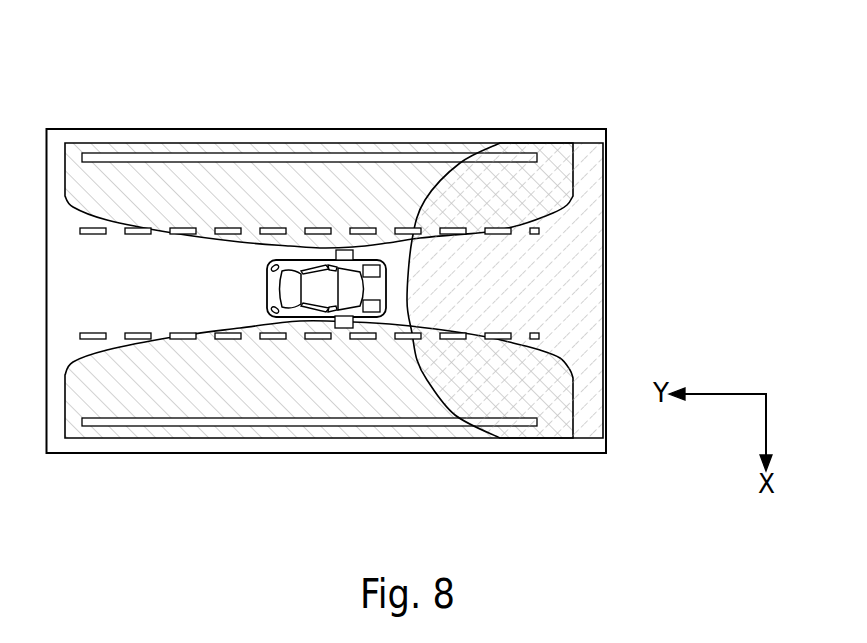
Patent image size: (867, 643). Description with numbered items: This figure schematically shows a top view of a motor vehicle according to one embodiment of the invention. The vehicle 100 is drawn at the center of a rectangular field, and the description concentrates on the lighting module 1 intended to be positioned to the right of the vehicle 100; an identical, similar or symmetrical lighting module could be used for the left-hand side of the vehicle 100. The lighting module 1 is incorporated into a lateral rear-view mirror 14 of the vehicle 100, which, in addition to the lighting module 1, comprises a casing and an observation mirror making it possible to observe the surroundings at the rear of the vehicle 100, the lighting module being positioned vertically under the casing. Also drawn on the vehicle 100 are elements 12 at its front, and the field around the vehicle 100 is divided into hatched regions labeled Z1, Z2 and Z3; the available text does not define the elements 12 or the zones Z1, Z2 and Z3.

The lighting module 1 is at (338, 251).
The front sensors 12 is at (387, 270).
The lateral rear-view mirror 14 is at (345, 328).
The vehicle 100 is at (286, 330).
The first zone Z1 is at (527, 267).
The second zone Z2 is at (313, 382).
The third zone Z3 is at (357, 187).